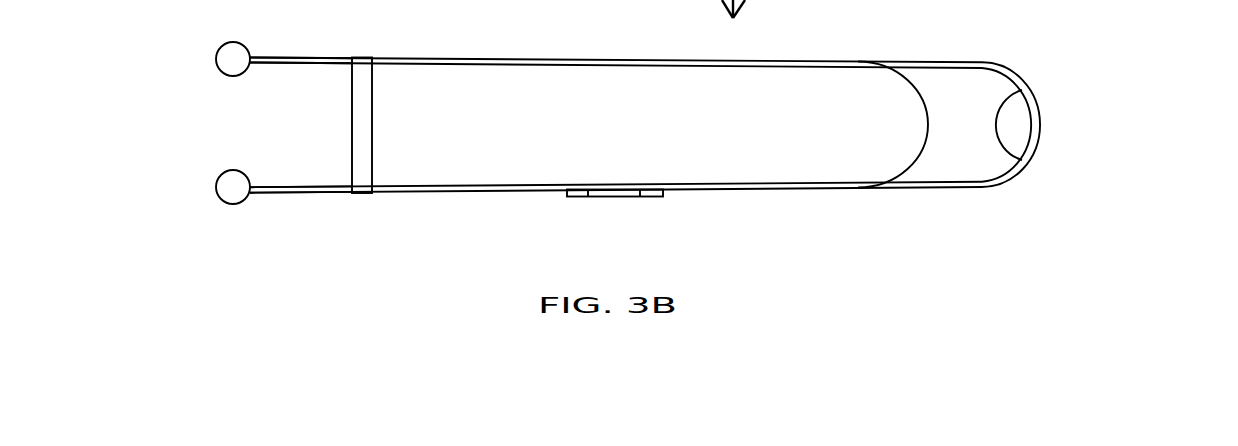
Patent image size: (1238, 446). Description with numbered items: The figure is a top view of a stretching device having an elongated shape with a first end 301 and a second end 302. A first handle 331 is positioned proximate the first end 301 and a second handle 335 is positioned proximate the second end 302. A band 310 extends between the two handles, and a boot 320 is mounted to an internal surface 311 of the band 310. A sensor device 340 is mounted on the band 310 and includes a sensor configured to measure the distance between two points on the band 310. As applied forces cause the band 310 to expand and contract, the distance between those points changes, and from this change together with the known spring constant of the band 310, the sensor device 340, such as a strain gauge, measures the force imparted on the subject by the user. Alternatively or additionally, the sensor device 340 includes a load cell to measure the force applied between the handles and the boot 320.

The first end 301 is at (215, 66).
The second end 302 is at (212, 197).
The band 310 is at (462, 190).
The internal surface 311 is at (587, 67).
The boot 320 is at (1040, 108).
The first handle 331 is at (218, 52).
The second handle 335 is at (232, 179).
The sensor device 340 is at (622, 195).